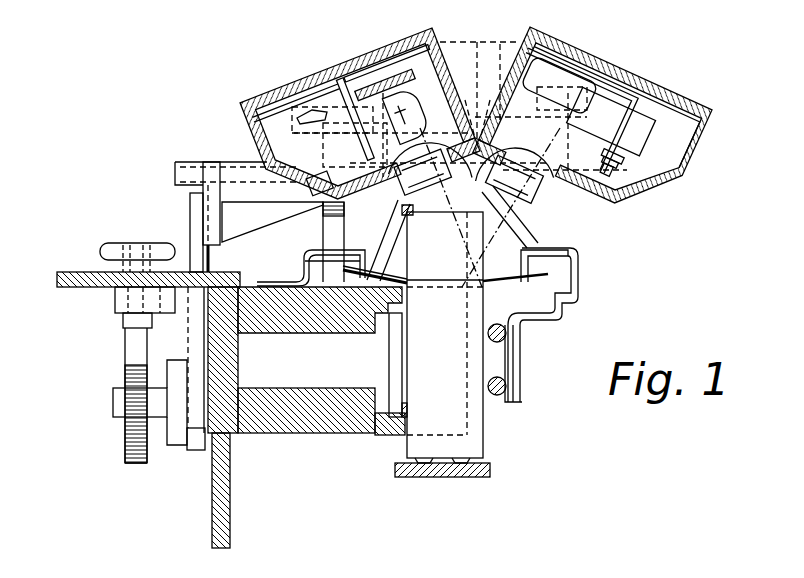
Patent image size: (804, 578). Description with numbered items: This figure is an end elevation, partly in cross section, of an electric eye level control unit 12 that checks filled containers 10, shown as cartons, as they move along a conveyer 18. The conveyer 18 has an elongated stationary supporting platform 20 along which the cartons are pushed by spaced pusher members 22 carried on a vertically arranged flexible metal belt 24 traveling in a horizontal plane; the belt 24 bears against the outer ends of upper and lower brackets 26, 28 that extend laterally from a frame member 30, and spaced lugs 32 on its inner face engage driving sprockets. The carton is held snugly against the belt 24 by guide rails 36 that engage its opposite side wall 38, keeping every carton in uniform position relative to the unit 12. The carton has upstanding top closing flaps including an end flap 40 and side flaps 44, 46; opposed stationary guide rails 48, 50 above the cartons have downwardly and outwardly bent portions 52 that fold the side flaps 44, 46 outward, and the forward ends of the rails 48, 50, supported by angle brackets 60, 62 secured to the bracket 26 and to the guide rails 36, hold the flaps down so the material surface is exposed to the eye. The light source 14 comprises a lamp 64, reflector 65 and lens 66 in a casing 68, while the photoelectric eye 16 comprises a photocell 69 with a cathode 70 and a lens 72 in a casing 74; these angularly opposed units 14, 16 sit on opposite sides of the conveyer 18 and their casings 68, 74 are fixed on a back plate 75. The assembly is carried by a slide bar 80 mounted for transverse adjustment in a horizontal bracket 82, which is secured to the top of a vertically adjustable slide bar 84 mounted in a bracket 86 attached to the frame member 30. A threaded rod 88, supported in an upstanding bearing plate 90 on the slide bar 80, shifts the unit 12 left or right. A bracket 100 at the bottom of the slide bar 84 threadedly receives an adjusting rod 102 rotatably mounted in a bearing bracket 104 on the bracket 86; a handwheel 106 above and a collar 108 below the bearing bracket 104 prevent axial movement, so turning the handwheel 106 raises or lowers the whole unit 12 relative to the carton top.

The filled container 10 is at (486, 298).
The electric eye level control unit 12 is at (535, 16).
The light source 14 is at (316, 58).
The photoelectric eye 16 is at (652, 68).
The conveyer 18 is at (391, 454).
The stationary supporting platform 20 is at (447, 478).
The pusher member 22 is at (485, 447).
The flexible metal belt 24 is at (380, 426).
The upper bracket 26 is at (300, 334).
The lower bracket 28 is at (288, 433).
The frame member 30 is at (230, 488).
The lug 32 is at (389, 367).
The guide rail 36 is at (499, 385).
The side wall 38 is at (484, 428).
The end flap 40 is at (480, 240).
The side flap 44 is at (390, 271).
The side flap 46 is at (518, 278).
The stationary guide rail 48 is at (305, 261).
The stationary guide rail 50 is at (533, 264).
The downwardly and outwardly bent portion 52 is at (381, 236).
The angle bracket 60 is at (305, 250).
The angle bracket 62 is at (580, 283).
The lamp 64 is at (450, 90).
The reflector 65 is at (405, 80).
The lens 66 is at (423, 200).
The casing 68 is at (262, 93).
The photocell 69 is at (593, 73).
The cathode 70 is at (576, 96).
The lens 72 is at (530, 196).
The casing 74 is at (690, 96).
The back plate 75 is at (453, 42).
The slide bar 80 is at (177, 167).
The horizontal bracket 82 is at (210, 160).
The vertically adjustable slide bar 84 is at (190, 218).
The bracket 86 is at (180, 339).
The rod 88 is at (478, 102).
The upstanding bearing plate 90 is at (500, 44).
The bracket 100 is at (176, 443).
The adjusting rod 102 is at (120, 427).
The bearing bracket 104 is at (116, 301).
The handwheel 106 is at (112, 243).
The collar 108 is at (122, 325).